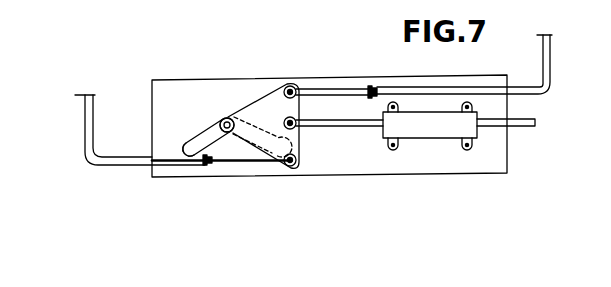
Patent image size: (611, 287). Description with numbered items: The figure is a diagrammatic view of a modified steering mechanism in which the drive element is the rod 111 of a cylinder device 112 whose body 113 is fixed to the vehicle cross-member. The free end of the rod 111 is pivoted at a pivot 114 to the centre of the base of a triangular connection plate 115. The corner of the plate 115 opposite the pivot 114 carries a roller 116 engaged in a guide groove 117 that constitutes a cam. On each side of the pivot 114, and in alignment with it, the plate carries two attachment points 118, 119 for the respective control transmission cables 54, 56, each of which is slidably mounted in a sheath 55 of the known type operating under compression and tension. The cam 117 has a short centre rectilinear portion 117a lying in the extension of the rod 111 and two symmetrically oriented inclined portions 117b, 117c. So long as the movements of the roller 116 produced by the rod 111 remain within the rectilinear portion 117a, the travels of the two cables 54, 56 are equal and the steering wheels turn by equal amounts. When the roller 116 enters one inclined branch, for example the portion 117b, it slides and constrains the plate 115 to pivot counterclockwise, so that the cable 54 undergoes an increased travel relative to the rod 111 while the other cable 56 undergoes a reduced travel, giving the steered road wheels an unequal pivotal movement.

The control transmission cable 54 is at (362, 89).
The sheath 55 is at (133, 167).
The control transmission cable 56 is at (250, 163).
The rod 111 is at (368, 127).
The cylinder device 112 is at (432, 143).
The body 113 is at (462, 126).
The pivot 114 is at (298, 112).
The triangular connection plate 115 is at (265, 104).
The roller 116 is at (219, 120).
The guide groove 117 is at (197, 124).
The centre rectilinear portion 117a is at (225, 117).
The inclined portion 117b is at (186, 149).
The inclined portion 117c is at (297, 147).
The attachment point 118 is at (292, 86).
The attachment point 119 is at (295, 166).